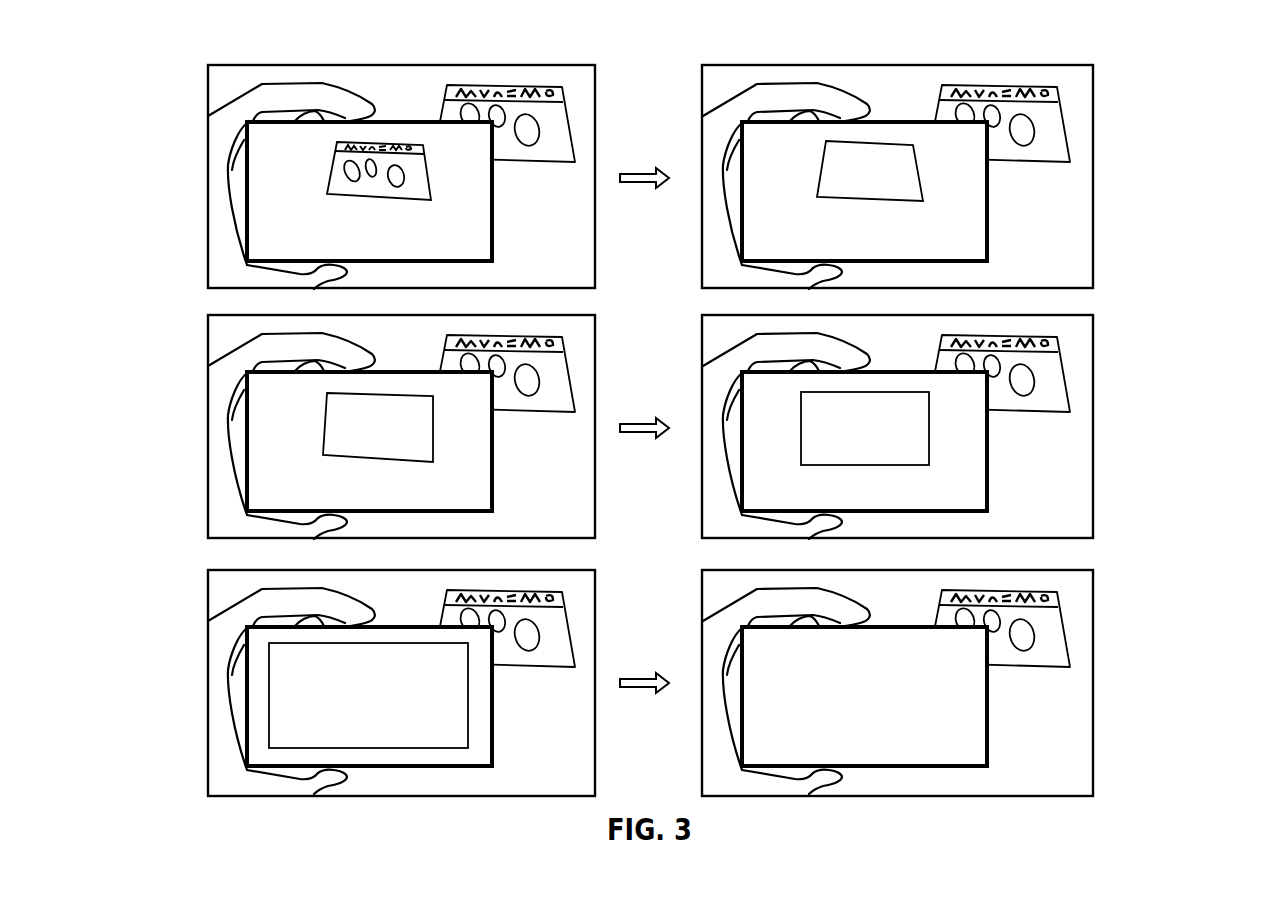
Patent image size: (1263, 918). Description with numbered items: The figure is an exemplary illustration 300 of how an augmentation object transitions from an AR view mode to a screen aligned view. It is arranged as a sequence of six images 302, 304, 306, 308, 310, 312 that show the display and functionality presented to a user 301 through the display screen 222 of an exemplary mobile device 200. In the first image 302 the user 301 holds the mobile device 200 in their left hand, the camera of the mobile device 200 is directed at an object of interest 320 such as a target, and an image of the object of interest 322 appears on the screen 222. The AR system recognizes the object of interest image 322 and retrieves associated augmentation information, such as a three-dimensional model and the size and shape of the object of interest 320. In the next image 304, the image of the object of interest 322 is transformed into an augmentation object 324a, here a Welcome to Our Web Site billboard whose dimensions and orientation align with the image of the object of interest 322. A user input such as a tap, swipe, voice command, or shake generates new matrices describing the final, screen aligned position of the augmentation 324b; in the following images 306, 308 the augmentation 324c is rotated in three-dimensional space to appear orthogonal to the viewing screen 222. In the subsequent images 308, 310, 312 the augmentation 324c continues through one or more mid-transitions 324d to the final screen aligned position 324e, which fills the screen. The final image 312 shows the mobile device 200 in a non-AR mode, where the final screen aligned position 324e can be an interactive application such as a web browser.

The exemplary illustration 300 is at (1176, 112).
The user 301 is at (222, 127).
The mobile device 200 is at (247, 197).
The first image 302 is at (207, 265).
The next image 304 is at (1093, 266).
The image 306 is at (207, 512).
The image 308 is at (1093, 516).
The image 310 is at (207, 768).
The final image 312 is at (1093, 771).
The object of interest 320 is at (443, 98).
The image of the object of interest 322 is at (385, 200).
The display screen 222 is at (276, 240).
The augmentation object 324a is at (881, 201).
The augmentation 324b is at (355, 460).
The augmentation 324c is at (897, 465).
The mid-transition 324d is at (468, 728).
The final screen aligned position 324e is at (985, 730).